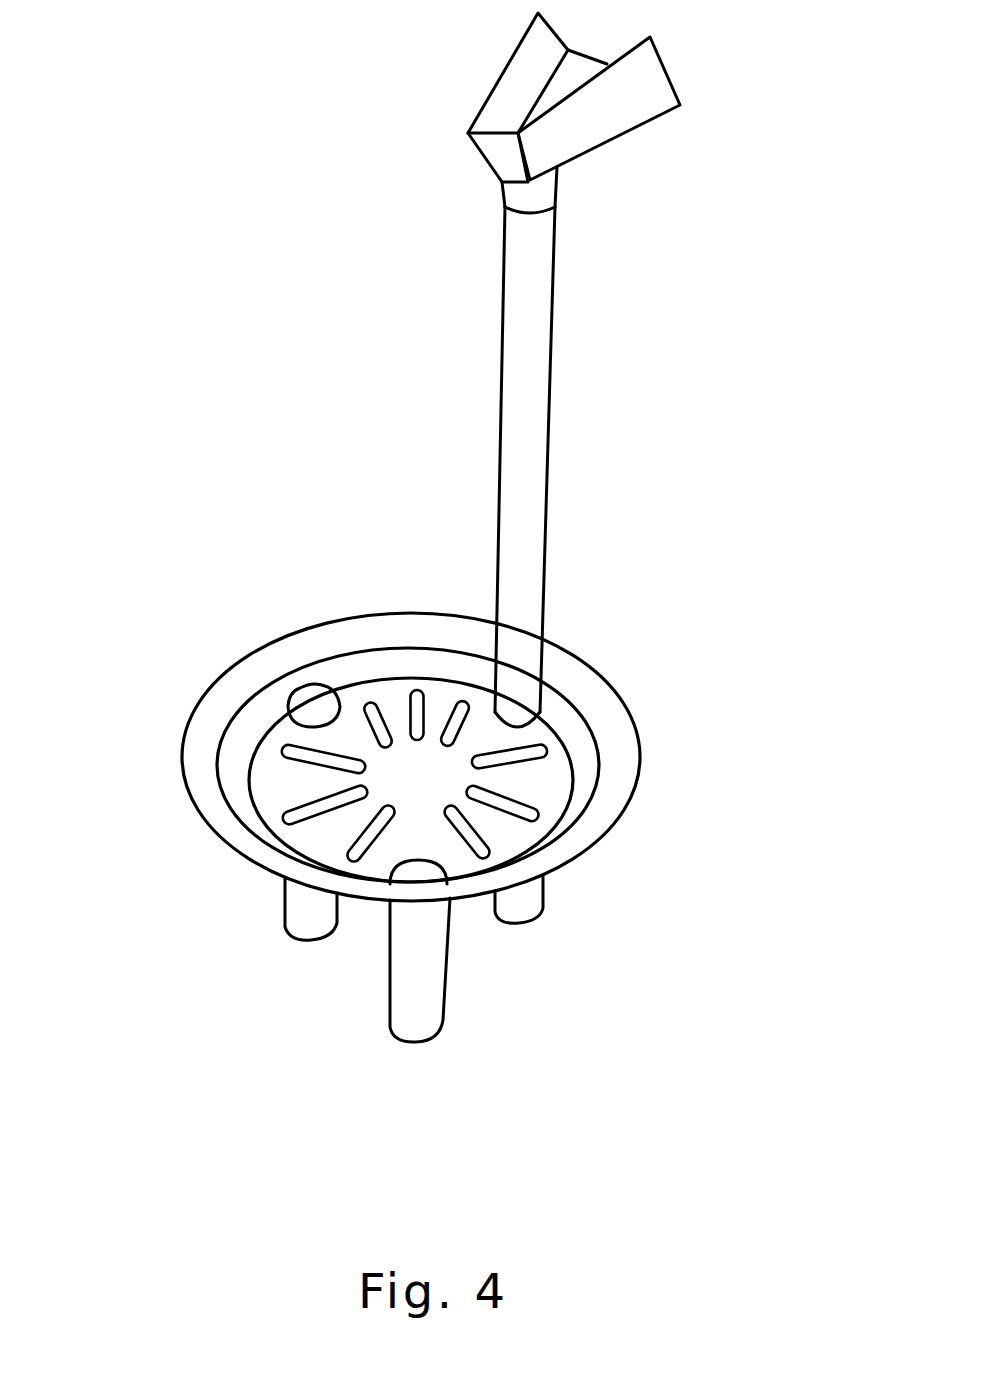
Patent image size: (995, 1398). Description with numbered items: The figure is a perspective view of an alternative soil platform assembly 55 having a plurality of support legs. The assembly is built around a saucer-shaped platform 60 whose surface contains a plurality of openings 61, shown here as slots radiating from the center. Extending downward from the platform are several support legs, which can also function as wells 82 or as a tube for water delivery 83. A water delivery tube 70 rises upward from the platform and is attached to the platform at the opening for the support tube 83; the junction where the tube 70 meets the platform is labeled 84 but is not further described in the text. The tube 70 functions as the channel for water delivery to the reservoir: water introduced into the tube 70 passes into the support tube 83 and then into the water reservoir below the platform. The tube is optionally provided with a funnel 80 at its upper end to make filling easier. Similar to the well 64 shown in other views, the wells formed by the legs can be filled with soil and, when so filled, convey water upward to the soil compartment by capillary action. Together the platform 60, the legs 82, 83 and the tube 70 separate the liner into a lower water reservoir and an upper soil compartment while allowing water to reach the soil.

The soil platform assembly 55 is at (160, 688).
The platform 60 is at (638, 745).
The openings 61 is at (290, 820).
The well 64 is at (307, 703).
The water delivery tube 70 is at (629, 447).
The funnel 80 is at (618, 113).
The support legs 82 is at (305, 903).
The support tube 83 is at (527, 895).
The stem base 84 is at (537, 708).